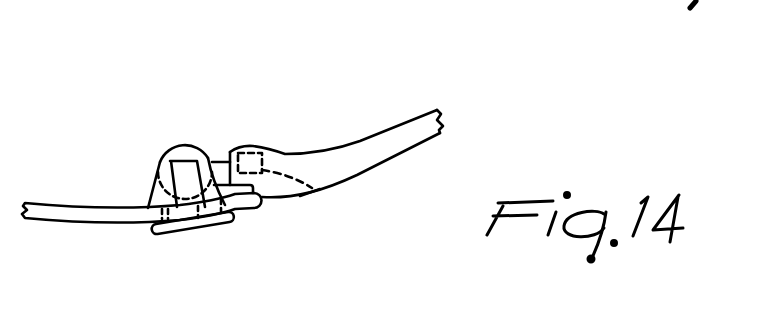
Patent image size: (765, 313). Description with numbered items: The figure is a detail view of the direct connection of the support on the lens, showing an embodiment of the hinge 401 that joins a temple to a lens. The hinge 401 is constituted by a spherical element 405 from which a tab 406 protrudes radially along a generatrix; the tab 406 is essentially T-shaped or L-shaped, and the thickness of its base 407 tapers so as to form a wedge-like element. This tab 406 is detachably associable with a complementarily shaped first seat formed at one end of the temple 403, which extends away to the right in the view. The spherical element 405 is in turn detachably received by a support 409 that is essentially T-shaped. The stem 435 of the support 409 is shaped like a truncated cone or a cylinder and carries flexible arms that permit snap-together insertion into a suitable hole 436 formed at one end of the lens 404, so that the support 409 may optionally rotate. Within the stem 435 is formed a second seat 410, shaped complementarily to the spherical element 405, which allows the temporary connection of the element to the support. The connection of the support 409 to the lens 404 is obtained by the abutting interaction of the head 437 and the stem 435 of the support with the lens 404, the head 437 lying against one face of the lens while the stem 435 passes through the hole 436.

The hinge 401 is at (302, 83).
The temple 403 is at (397, 143).
The lens 404 is at (84, 219).
The spherical element 405 is at (196, 148).
The tab 406 is at (219, 157).
The base 407 is at (318, 188).
The support 409 is at (143, 144).
The second seat 410 is at (184, 171).
The stem 435 is at (151, 195).
The hole 436 is at (206, 229).
The head 437 is at (173, 234).